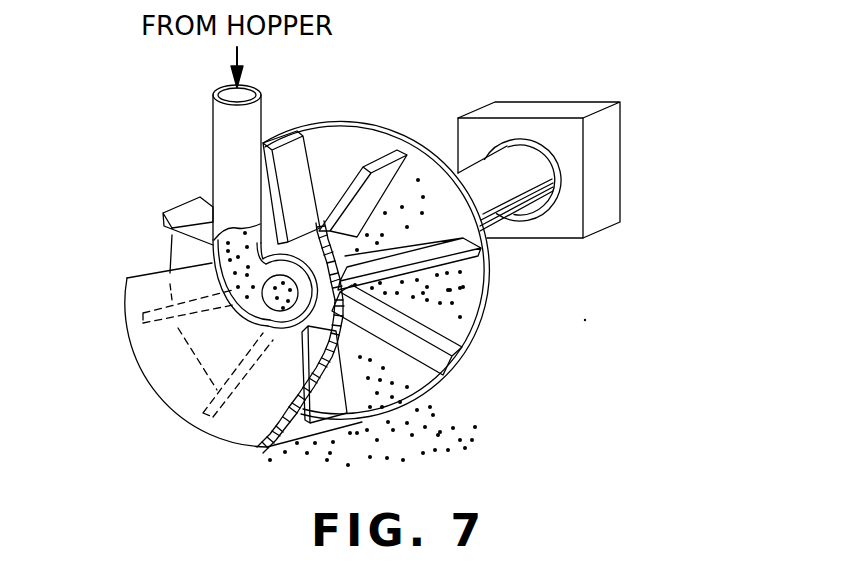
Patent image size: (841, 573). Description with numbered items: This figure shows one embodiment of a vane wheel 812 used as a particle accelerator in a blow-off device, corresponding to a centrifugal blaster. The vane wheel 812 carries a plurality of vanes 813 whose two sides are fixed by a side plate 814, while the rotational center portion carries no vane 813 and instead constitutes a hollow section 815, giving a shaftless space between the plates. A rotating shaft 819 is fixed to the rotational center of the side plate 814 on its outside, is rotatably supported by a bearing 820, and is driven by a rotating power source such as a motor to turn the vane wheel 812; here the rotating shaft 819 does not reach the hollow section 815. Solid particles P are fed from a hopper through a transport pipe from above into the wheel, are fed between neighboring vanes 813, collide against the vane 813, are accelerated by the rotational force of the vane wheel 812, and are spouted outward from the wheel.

The vane wheel 812 is at (144, 394).
The vane 813 is at (432, 342).
The side plate 814 is at (360, 141).
The hollow section 815 is at (290, 302).
The rotating shaft 819 is at (498, 205).
The bearing 820 is at (610, 170).
The solid particles P is at (438, 428).